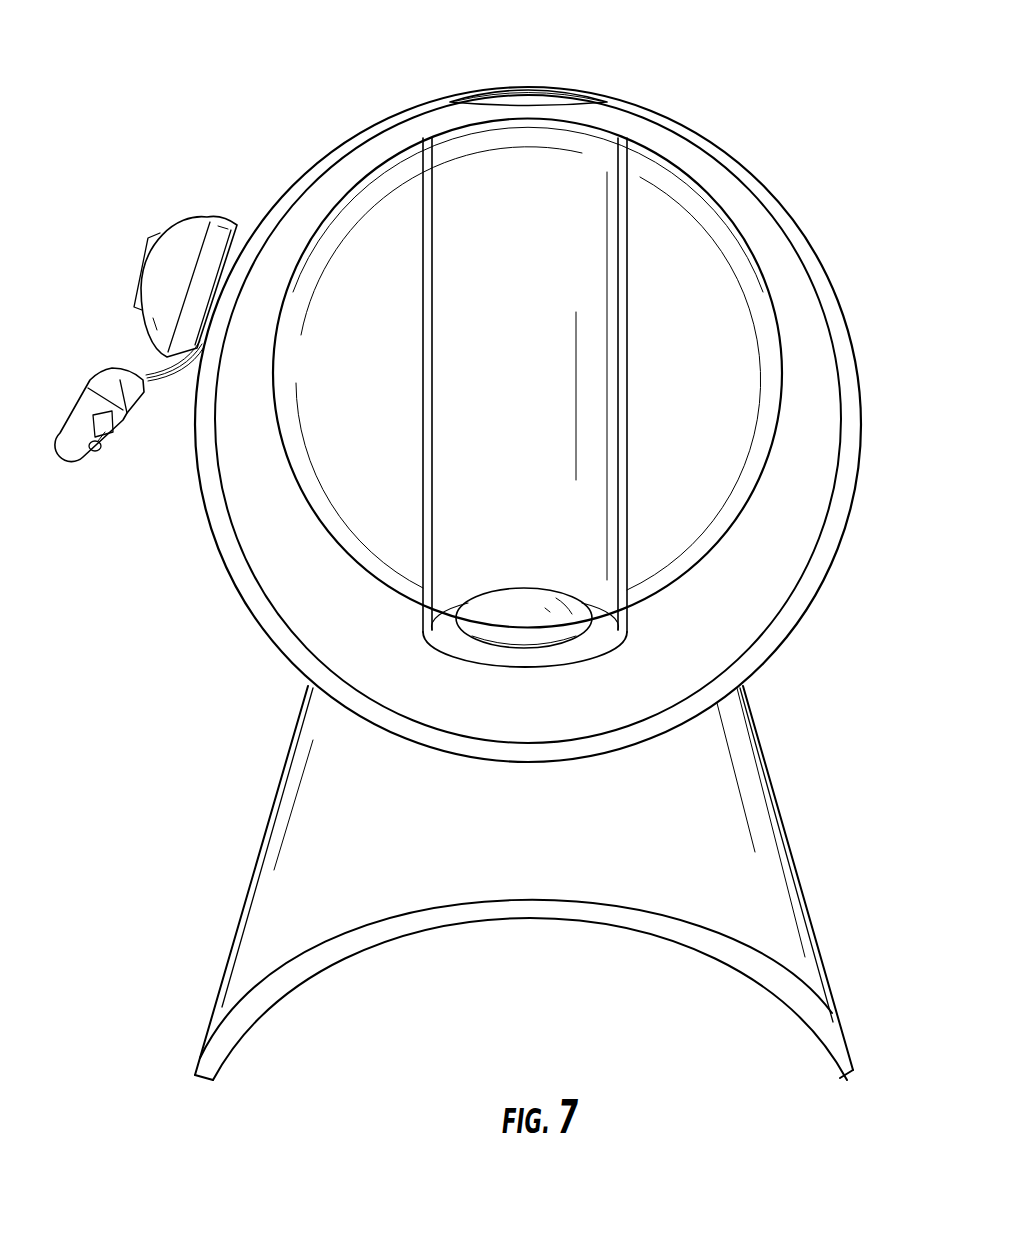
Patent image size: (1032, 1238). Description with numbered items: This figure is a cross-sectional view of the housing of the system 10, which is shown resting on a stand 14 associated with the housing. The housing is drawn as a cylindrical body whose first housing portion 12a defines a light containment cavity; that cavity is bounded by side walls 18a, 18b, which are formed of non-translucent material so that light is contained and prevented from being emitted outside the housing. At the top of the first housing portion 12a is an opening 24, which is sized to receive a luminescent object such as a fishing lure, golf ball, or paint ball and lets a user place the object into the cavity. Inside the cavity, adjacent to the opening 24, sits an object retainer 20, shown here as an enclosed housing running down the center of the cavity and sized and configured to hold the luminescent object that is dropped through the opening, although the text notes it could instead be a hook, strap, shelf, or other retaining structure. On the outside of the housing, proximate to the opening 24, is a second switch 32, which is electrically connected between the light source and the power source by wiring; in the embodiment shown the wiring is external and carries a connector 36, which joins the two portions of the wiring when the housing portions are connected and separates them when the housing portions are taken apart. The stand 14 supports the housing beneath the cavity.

The system 10 is at (639, 47).
The first housing portion 12a is at (330, 152).
The stand 14 is at (747, 768).
The side wall 18a is at (275, 537).
The side wall 18b is at (407, 440).
The object retainer 20 is at (597, 380).
The opening 24 is at (526, 97).
The second switch 32 is at (162, 263).
The connector 36 is at (82, 410).